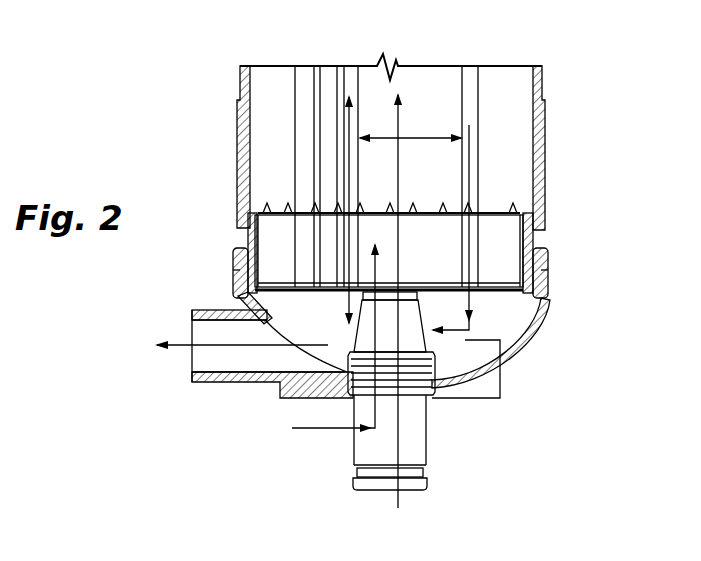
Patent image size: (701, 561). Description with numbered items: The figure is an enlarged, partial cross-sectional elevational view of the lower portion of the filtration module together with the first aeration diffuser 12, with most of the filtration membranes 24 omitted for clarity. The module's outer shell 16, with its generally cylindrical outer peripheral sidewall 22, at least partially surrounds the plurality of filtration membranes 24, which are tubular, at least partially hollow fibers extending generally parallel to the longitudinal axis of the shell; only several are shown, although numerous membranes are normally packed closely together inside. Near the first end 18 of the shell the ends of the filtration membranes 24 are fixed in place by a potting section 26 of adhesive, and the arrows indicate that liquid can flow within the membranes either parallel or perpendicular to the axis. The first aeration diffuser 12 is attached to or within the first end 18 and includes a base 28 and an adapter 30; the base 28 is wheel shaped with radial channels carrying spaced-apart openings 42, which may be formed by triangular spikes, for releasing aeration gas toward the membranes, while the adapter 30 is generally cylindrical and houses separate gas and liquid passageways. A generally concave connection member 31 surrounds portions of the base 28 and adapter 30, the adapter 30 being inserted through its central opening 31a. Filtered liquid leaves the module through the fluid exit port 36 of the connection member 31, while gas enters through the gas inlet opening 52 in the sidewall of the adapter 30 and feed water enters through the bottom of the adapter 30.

The first aeration diffuser 12 is at (626, 208).
The outer shell 16 is at (243, 125).
The first end 18 is at (250, 210).
The outer peripheral sidewall 22 is at (240, 85).
The filtration membranes 24 is at (295, 100).
The potting section 26 is at (535, 233).
The base 28 is at (548, 270).
The adapter 30 is at (423, 440).
The connection member 31 is at (527, 328).
The central opening 31a is at (355, 402).
The fluid exit port 36 is at (228, 382).
The openings 42 is at (492, 212).
The gas inlet opening 52 is at (352, 438).